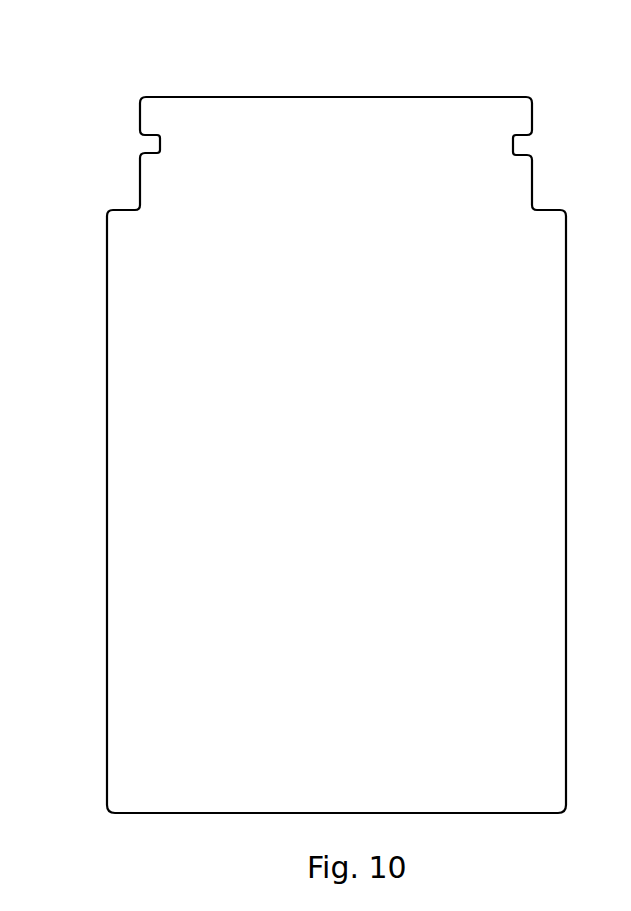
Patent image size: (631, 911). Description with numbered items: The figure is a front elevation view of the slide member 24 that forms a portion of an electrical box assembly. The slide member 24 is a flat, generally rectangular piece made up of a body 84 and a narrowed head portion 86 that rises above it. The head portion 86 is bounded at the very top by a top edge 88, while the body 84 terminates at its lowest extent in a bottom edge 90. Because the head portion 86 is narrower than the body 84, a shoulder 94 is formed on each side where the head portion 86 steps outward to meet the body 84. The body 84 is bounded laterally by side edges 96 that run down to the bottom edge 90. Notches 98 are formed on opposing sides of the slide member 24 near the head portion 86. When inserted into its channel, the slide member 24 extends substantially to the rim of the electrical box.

The slide member 24 is at (58, 226).
The body 84 is at (345, 483).
The narrowed head portion 86 is at (347, 171).
The top edge 88 is at (338, 96).
The bottom edge 90 is at (480, 814).
The shoulder 94 is at (548, 210).
The side edges 96 is at (107, 511).
The notches 98 is at (530, 147).